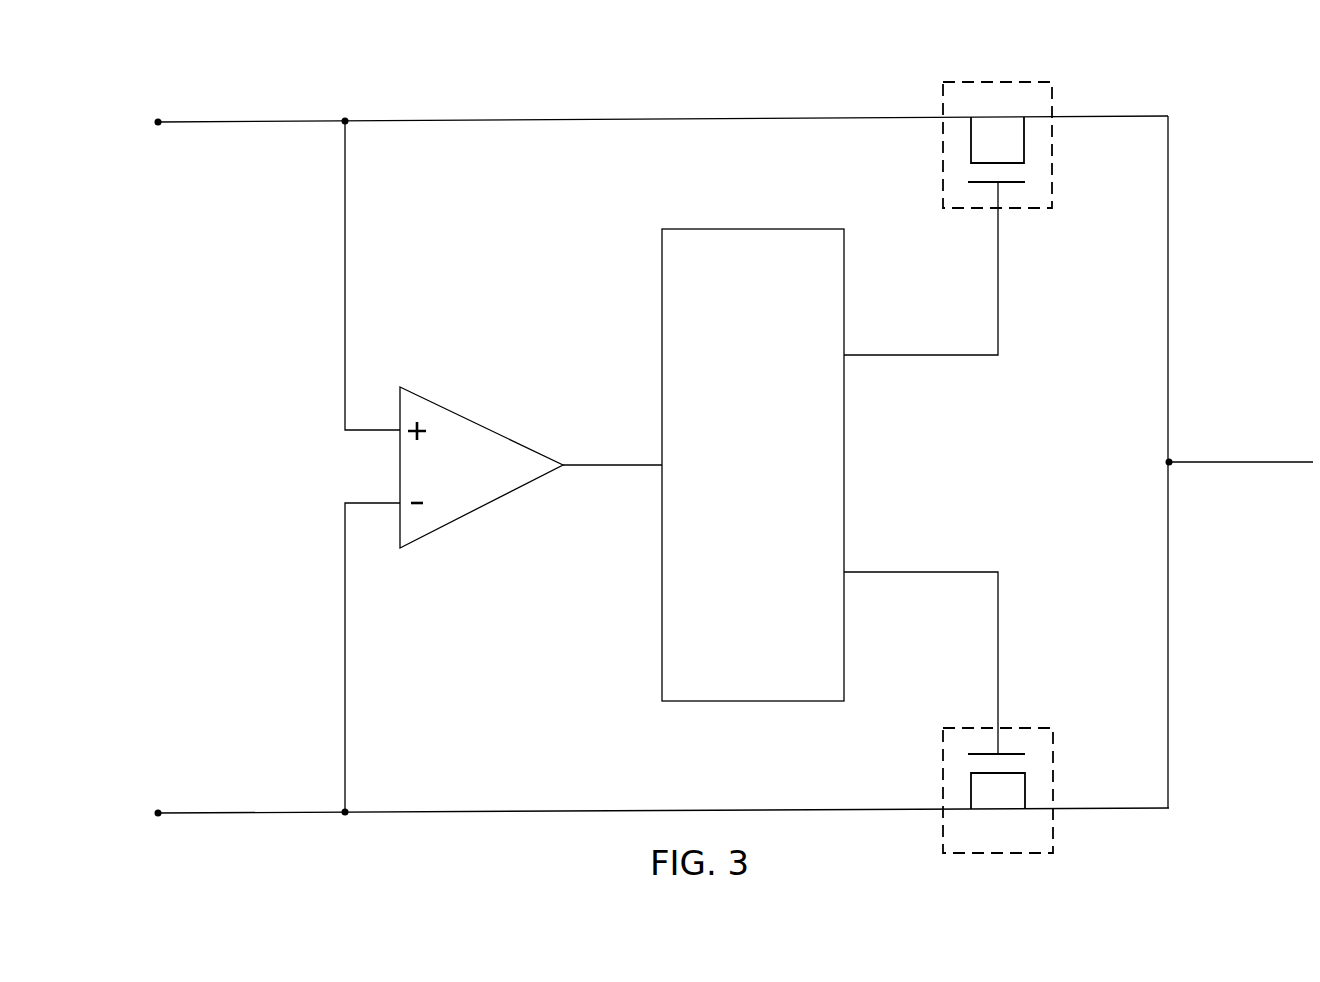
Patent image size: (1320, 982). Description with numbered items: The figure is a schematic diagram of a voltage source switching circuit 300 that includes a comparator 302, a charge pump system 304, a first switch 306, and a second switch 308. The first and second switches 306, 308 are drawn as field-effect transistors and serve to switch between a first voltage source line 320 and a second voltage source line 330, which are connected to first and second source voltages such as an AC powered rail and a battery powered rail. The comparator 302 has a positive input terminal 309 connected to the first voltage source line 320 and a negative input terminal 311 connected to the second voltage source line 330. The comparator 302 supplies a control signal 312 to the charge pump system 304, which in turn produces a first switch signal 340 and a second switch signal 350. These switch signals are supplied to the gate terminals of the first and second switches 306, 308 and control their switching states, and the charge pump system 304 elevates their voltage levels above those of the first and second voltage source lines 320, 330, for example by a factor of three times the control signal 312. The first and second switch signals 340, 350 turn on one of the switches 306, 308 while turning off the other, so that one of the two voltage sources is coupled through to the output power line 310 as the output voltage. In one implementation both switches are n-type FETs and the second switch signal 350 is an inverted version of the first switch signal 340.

The voltage source switching circuit 300 is at (420, 58).
The comparator 302 is at (458, 497).
The charge pump system 304 is at (740, 218).
The first switch 306 is at (1048, 60).
The second switch 308 is at (1040, 708).
The positive input terminal 309 is at (370, 430).
The output power line 310 is at (1254, 478).
The negative input terminal 311 is at (372, 505).
The control signal 312 is at (617, 463).
The first voltage source line 320 is at (178, 100).
The second voltage source line 330 is at (176, 826).
The first switch signal 340 is at (925, 357).
The second switch signal 350 is at (925, 571).